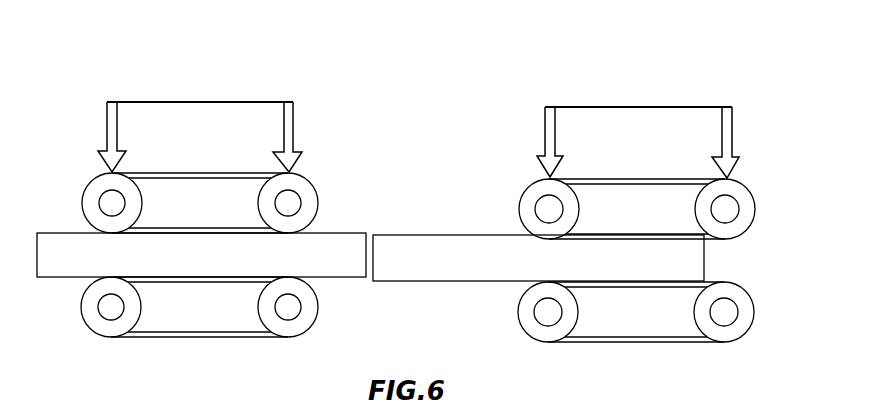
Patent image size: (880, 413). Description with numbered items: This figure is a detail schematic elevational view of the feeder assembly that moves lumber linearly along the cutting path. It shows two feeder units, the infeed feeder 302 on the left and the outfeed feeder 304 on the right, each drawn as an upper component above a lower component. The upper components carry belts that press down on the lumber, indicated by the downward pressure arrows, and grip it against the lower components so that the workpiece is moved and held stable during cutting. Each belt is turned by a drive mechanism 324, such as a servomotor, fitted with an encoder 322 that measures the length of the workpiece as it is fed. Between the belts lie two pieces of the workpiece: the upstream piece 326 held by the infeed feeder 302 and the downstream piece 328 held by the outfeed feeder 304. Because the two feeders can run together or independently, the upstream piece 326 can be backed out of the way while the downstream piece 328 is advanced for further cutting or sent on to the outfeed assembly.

The infeed feeder 302 is at (88, 84).
The outfeed feeder 304 is at (574, 86).
The encoder 322 is at (316, 191).
The drive mechanism 324 is at (306, 176).
The upstream piece 326 is at (347, 280).
The downstream piece 328 is at (436, 281).